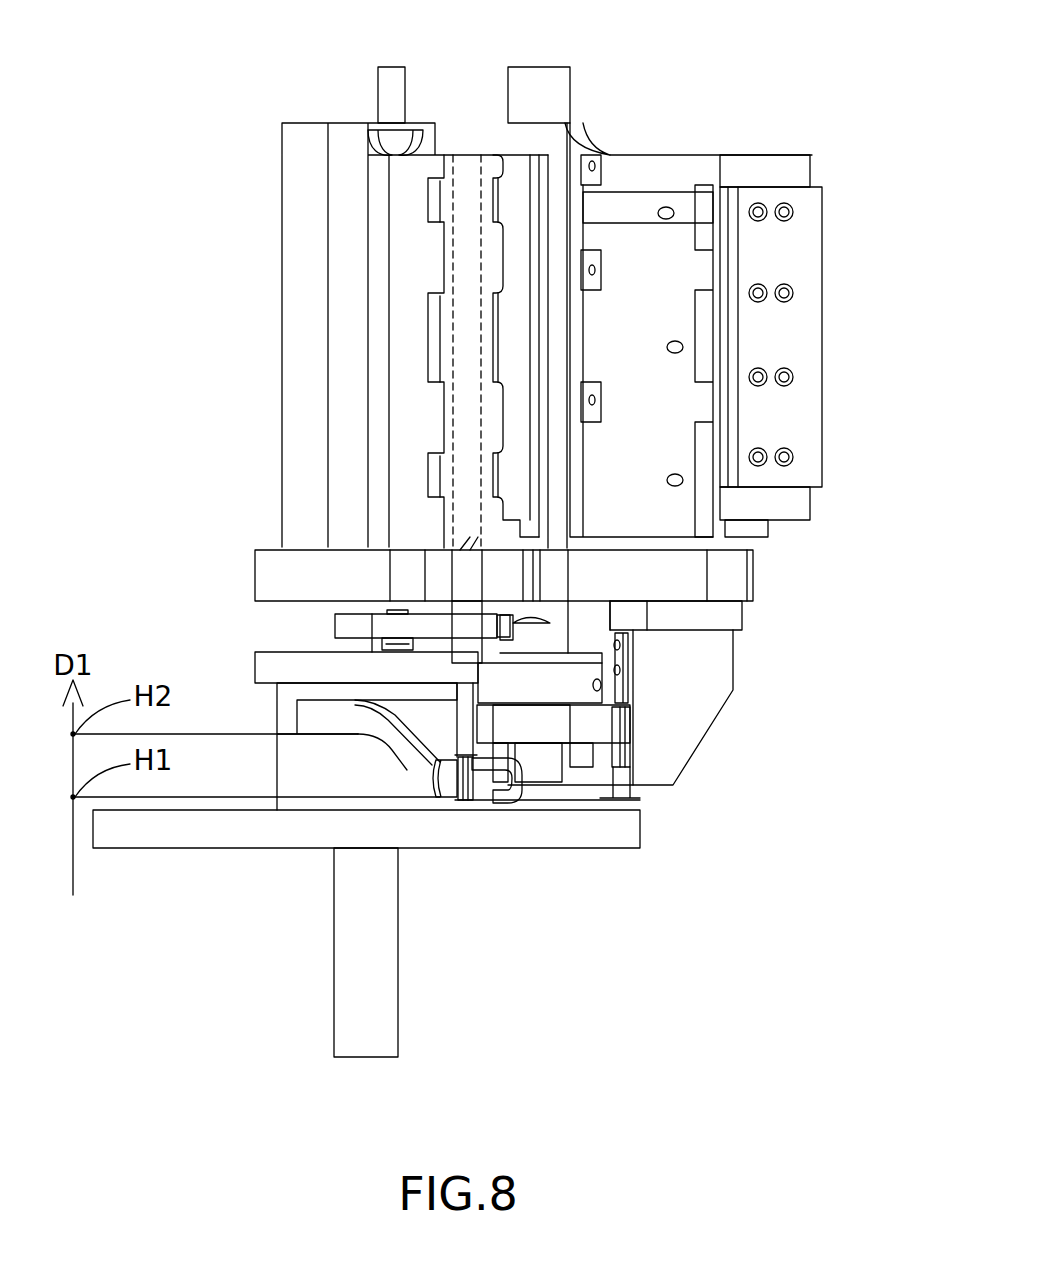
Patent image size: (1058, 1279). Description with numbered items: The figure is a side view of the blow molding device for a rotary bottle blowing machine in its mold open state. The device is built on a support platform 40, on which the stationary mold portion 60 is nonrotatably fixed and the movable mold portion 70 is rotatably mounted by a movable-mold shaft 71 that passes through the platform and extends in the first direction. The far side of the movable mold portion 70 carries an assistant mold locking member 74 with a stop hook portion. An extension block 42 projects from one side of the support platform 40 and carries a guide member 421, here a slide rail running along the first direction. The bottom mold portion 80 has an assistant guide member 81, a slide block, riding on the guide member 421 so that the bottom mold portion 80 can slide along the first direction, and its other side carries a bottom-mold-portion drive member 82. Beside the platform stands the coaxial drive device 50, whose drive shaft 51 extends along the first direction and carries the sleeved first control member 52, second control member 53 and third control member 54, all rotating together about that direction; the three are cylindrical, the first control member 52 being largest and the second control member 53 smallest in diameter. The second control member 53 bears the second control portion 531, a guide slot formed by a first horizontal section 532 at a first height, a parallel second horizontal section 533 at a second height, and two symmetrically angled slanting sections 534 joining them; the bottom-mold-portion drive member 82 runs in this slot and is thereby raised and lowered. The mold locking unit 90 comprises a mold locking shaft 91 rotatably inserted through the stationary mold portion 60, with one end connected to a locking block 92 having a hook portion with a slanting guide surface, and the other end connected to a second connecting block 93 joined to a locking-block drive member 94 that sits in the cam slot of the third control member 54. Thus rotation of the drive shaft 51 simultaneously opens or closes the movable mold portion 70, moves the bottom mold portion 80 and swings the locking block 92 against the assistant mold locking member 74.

The support platform 40 is at (258, 544).
The extension block 42 is at (710, 693).
The guide member 421 is at (628, 685).
The coaxial drive device 50 is at (366, 854).
The drive shaft 51 is at (342, 962).
The first control member 52 is at (175, 840).
The second control member 53 is at (366, 826).
The second control portion 531 is at (427, 834).
The first horizontal section 532 is at (450, 780).
The second horizontal section 533 is at (330, 737).
The slanting sections 534 is at (418, 782).
The third control member 54 is at (262, 662).
The stationary mold portion 60 is at (372, 118).
The movable mold portion 70 is at (722, 297).
The movable-mold shaft 71 is at (554, 76).
The assistant mold locking member 74 is at (808, 246).
The bottom mold portion 80 is at (570, 722).
The assistant guide member 81 is at (625, 740).
The bottom-mold-portion drive member 82 is at (465, 798).
The mold locking unit 90 is at (497, 388).
The mold locking shaft 91 is at (460, 416).
The locking block 92 is at (505, 165).
The second connecting block 93 is at (385, 625).
The locking-block drive member 94 is at (380, 648).